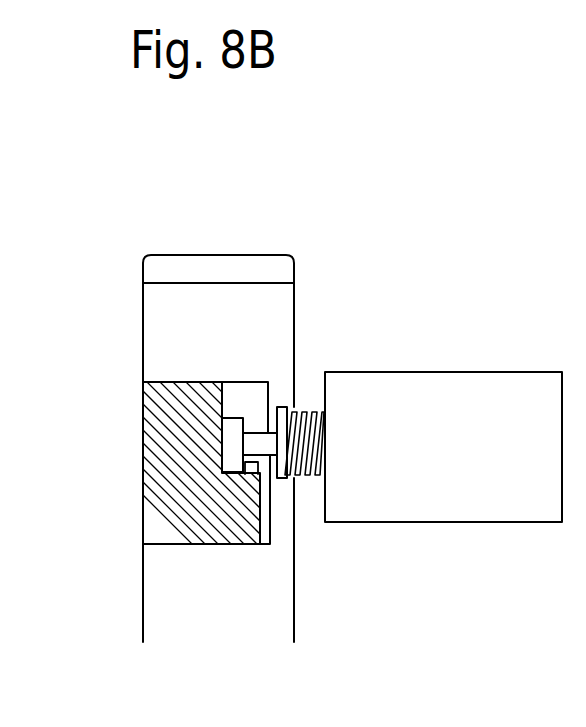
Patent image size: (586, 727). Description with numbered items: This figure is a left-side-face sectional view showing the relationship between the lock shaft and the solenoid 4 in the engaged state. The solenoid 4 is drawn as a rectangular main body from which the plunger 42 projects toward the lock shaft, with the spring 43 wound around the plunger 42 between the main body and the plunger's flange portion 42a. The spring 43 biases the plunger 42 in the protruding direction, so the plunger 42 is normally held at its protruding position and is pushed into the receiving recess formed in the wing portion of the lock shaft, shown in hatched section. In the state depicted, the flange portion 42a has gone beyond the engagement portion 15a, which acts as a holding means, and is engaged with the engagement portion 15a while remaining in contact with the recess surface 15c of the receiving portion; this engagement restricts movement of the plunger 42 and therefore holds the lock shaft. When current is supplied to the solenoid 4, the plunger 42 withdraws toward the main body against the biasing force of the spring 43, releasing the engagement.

The solenoid 4 is at (418, 430).
The engagement portion 15a is at (252, 463).
The recess surface 15c is at (230, 388).
The plunger 42 is at (258, 433).
The flange portion 42a is at (235, 417).
The spring 43 is at (300, 412).